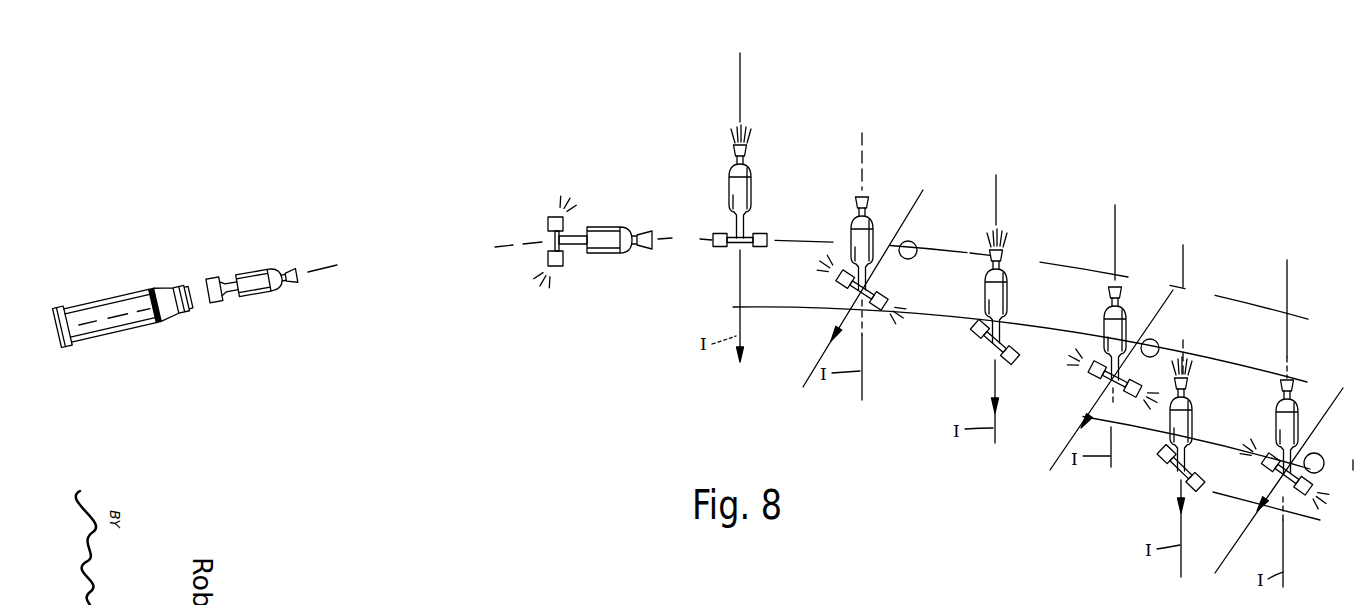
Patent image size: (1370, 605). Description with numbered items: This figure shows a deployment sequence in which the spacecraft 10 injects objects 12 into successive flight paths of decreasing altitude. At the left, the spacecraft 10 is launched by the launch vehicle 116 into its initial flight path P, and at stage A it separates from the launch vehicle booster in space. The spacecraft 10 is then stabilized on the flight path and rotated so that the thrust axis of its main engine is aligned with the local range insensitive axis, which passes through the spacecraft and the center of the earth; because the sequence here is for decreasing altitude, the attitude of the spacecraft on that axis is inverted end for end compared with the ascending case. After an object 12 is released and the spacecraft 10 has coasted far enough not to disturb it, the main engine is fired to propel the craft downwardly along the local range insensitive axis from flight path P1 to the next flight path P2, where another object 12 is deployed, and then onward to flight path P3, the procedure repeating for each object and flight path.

The launch vehicle 116 is at (140, 289).
The spacecraft 10 is at (244, 266).
The object 12 is at (924, 236).
The initial flight path P is at (1241, 296).
The flight path P1 is at (1313, 355).
The next flight path P2 is at (1332, 440).
The next flight path P3 is at (1330, 496).
The separation stage A is at (254, 343).